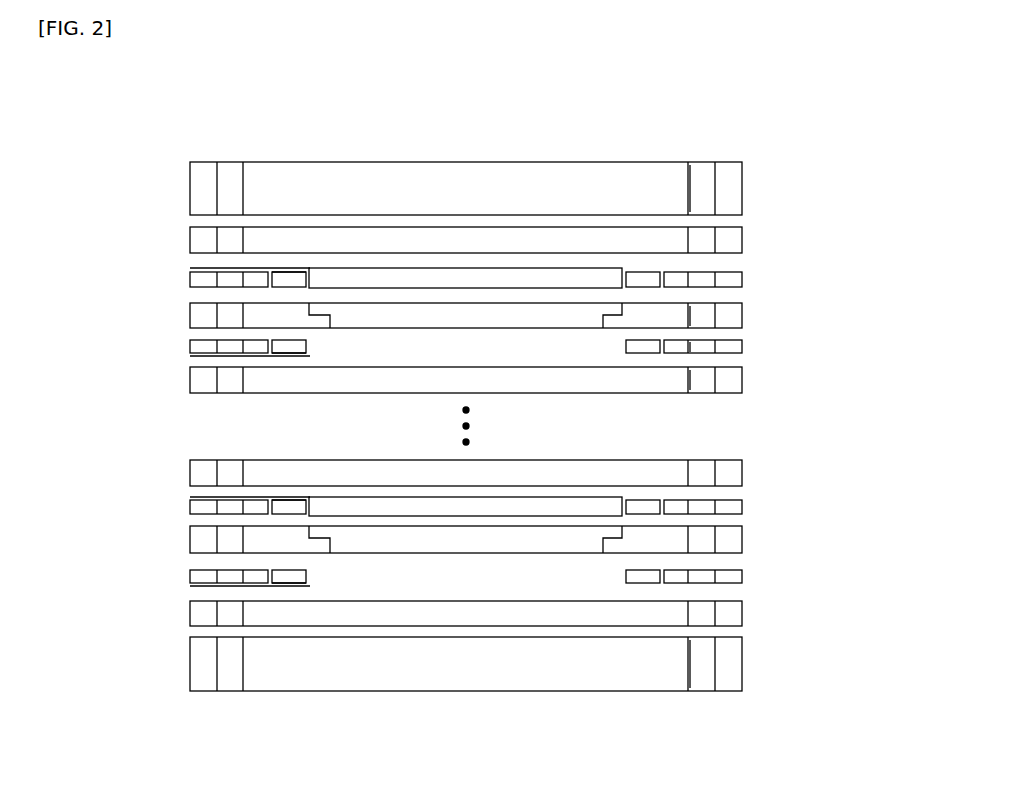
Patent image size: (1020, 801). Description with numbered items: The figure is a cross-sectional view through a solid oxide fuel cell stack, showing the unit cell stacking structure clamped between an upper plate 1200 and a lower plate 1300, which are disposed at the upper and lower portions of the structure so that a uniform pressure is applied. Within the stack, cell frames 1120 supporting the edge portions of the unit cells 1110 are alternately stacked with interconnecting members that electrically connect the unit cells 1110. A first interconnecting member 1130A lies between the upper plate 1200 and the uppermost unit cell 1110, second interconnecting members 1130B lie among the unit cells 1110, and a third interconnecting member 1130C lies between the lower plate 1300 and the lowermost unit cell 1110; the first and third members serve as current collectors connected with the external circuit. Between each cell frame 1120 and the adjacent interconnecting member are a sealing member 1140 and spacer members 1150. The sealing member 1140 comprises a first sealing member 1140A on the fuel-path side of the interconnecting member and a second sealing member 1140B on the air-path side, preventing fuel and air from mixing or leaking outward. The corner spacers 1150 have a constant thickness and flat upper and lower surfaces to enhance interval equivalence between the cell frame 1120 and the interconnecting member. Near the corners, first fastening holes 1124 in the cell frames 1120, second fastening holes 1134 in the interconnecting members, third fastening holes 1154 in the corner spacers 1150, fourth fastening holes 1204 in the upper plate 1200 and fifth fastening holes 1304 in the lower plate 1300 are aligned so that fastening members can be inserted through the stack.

The upper plate 1200 is at (742, 185).
The fourth fastening hole 1204 is at (703, 178).
The first interconnecting member 1130A is at (742, 240).
The second interconnecting member 1130B is at (742, 380).
The third interconnecting member 1130C is at (742, 613).
The second fastening hole 1134 is at (702, 383).
The unit cell 1110 is at (601, 269).
The cell frame 1120 is at (742, 311).
The first fastening hole 1124 is at (708, 312).
The spacer member 1150 is at (742, 276).
The third fastening hole 1154 is at (702, 348).
The sealing member 1140 is at (112, 255).
The first sealing member 1140A is at (288, 353).
The second sealing member 1140B is at (288, 272).
The lower plate 1300 is at (742, 664).
The fifth fastening hole 1304 is at (701, 685).